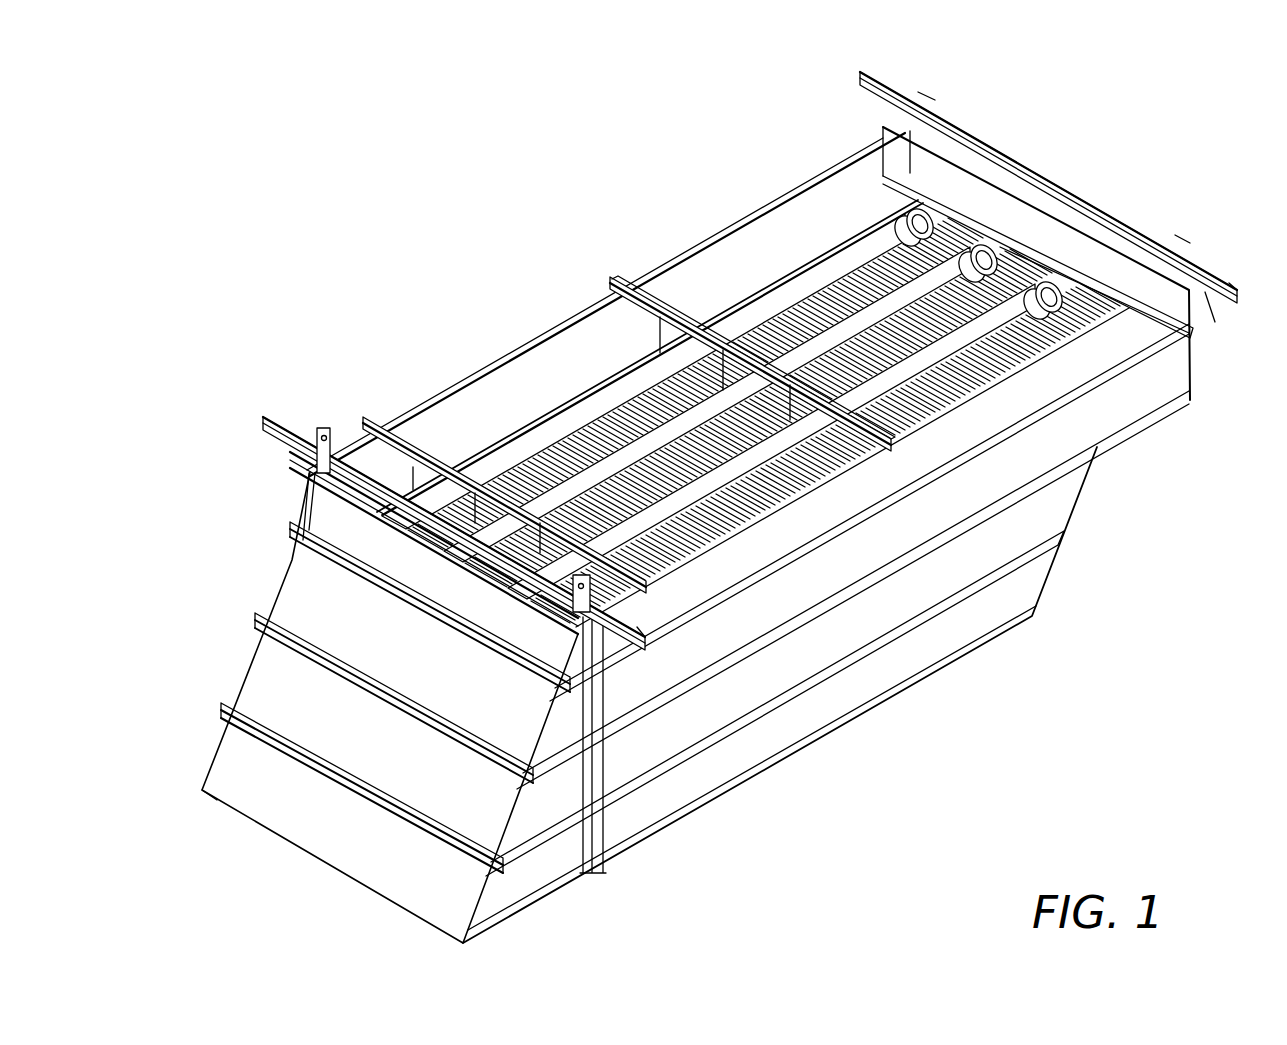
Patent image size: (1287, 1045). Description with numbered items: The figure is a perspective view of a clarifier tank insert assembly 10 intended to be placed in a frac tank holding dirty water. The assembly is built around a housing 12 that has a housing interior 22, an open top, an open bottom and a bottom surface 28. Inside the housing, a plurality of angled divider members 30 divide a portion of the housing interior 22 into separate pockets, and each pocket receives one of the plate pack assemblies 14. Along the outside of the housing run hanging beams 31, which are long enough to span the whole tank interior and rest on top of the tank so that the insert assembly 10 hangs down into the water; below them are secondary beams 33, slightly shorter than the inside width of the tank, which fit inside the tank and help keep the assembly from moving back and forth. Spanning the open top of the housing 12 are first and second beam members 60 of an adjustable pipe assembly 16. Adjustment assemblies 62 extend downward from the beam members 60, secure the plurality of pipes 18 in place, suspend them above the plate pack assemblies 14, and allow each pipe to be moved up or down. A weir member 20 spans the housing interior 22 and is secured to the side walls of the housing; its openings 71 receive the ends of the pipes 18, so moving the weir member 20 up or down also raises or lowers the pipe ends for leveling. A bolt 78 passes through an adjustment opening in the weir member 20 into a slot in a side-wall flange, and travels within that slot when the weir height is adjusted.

The clarifier tank insert assembly 10 is at (1220, 130).
The housing 12 is at (1030, 590).
The plate pack assemblies 14 is at (735, 300).
The adjustable pipe assembly 16 is at (842, 212).
The pipes 18 is at (950, 262).
The weir member 20 is at (1015, 275).
The housing interior 22 is at (510, 392).
The bottom surface 28 is at (815, 745).
The angled divider members 30 is at (565, 380).
The hanging beams 31 is at (872, 70).
The secondary beams 33 is at (292, 455).
The beam members 60 is at (613, 282).
The adjustment assemblies 62 is at (635, 345).
The opening 71 is at (1063, 292).
The bolt 78 is at (880, 178).